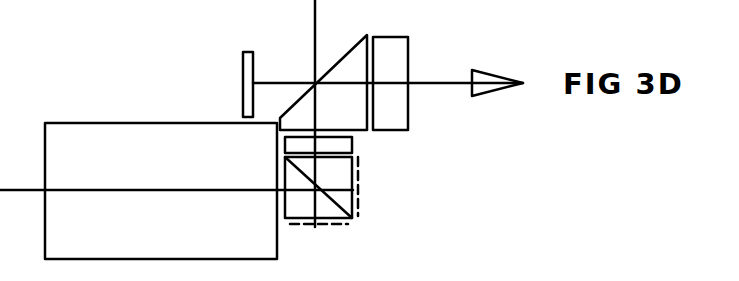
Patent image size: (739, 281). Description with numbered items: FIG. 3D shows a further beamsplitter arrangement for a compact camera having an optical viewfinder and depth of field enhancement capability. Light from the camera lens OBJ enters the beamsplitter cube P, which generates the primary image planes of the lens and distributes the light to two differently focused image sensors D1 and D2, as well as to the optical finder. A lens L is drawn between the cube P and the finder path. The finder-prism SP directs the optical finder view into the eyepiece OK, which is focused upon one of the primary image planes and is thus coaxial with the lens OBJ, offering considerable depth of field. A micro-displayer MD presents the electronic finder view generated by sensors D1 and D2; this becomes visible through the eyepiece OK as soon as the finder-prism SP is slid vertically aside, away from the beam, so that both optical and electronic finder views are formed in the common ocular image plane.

The camera lens OBJ is at (161, 191).
The micro-displayer MD is at (228, 84).
The finder-prism SP is at (323, 82).
The eyepiece OK is at (391, 69).
The lens L is at (326, 146).
The beamsplitter cube P is at (318, 187).
The image sensor D1 is at (375, 186).
The image sensor D2 is at (319, 241).